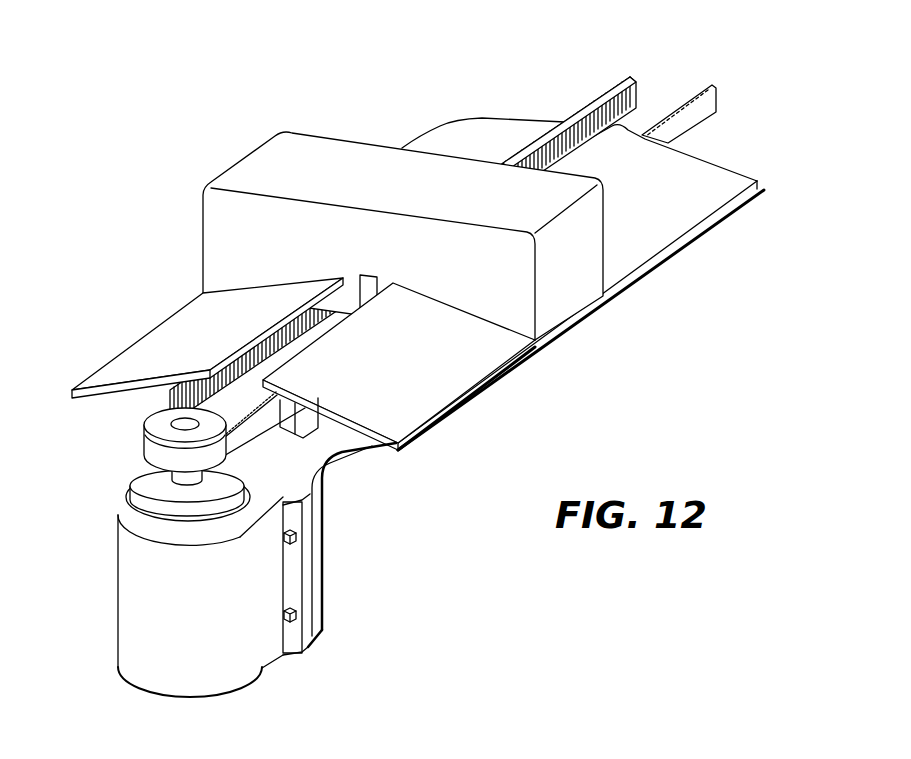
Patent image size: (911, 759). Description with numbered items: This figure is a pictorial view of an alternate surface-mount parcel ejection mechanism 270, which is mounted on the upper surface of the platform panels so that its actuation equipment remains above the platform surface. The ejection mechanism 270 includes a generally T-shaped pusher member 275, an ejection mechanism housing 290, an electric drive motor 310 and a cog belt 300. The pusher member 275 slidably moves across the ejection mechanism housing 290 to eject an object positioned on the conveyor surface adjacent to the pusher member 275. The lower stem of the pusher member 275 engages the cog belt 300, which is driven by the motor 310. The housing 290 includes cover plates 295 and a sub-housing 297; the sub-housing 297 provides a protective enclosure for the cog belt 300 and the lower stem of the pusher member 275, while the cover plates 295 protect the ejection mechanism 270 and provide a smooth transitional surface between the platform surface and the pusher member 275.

The parcel ejection mechanism 270 is at (370, 132).
The pusher member 275 is at (222, 240).
The ejection mechanism housing 290 is at (668, 218).
The cover plates 295 is at (487, 383).
The sub-housing 297 is at (170, 392).
The cog belt 300 is at (240, 442).
The electric drive motor 310 is at (138, 620).